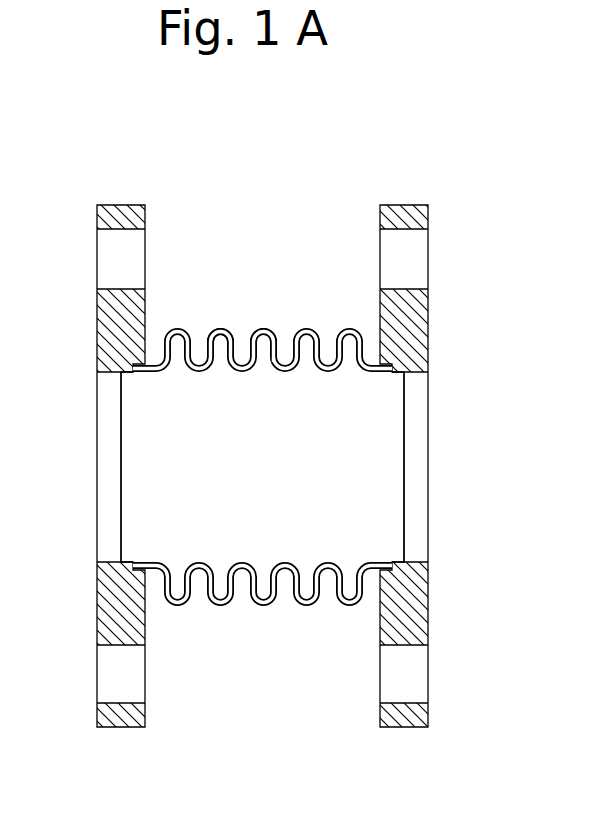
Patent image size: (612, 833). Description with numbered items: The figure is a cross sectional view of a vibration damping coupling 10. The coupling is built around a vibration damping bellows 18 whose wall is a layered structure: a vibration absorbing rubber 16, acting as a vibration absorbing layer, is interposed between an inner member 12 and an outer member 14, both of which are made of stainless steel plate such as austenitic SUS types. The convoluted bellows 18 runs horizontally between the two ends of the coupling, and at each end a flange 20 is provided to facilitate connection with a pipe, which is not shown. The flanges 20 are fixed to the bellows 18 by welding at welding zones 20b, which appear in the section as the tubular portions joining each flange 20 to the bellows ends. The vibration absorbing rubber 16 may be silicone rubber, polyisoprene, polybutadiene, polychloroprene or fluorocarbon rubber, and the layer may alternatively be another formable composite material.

The vibration damping coupling 10 is at (374, 138).
The inner member 12 is at (239, 373).
The outer member 14 is at (221, 323).
The vibration absorbing rubber 16 is at (265, 323).
The vibration damping bellows 18 is at (317, 283).
The flange 20 is at (101, 312).
The welding zone 20b is at (121, 488).